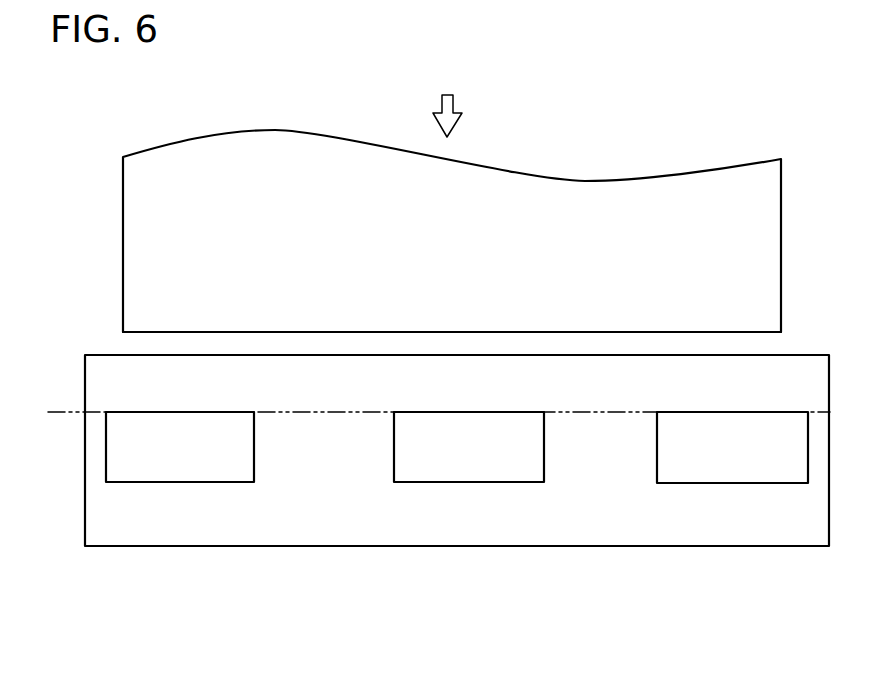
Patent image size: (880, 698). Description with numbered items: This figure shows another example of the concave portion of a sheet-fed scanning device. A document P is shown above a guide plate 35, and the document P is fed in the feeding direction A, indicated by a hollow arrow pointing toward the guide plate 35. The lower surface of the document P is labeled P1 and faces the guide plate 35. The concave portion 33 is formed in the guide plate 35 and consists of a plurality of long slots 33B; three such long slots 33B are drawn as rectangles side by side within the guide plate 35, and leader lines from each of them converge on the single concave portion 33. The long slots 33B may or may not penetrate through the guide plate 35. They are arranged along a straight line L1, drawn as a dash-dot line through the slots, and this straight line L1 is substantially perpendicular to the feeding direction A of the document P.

The document P is at (452, 231).
The surface of recording medium P1 is at (278, 332).
The feeding direction A is at (463, 116).
The concave portion 33 is at (457, 537).
The long slots 33B is at (193, 459).
The guide plate 35 is at (762, 528).
The straight line L1 is at (63, 412).